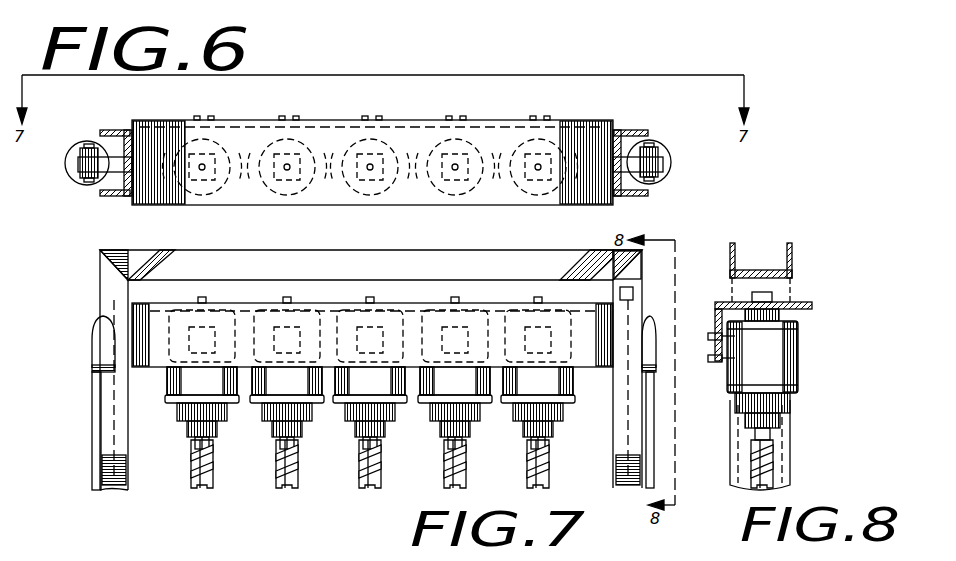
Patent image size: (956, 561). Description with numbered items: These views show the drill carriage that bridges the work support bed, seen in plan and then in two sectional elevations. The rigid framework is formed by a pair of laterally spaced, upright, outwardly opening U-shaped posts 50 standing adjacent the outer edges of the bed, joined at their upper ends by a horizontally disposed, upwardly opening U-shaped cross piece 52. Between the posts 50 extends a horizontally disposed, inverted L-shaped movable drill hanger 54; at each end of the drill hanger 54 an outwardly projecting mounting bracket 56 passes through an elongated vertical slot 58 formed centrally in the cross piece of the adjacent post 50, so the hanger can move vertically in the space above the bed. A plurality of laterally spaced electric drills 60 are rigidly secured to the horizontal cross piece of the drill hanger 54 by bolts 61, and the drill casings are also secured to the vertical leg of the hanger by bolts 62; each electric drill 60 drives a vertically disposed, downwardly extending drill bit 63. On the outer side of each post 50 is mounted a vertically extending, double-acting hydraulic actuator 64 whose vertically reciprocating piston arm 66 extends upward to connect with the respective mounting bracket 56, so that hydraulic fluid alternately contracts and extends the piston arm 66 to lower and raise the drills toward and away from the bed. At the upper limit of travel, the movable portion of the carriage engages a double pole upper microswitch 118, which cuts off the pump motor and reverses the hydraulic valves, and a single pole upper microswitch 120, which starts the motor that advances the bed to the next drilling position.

In FIG. 6, the post 50 is at (118, 134).
In FIG. 7, the post 50 is at (128, 478).
In FIG. 8, the cross piece 52 is at (758, 268).
In FIG. 6, the drill hanger 54 is at (240, 135).
In FIG. 7, the drill hanger 54 is at (410, 322).
In FIG. 8, the drill hanger 54 is at (812, 305).
In FIG. 6, the mounting bracket 56 is at (78, 150).
In FIG. 7, the mounting bracket 56 is at (93, 325).
In FIG. 6, the elongated vertical slot 58 is at (120, 150).
In FIG. 6, the electric drill 60 is at (385, 195).
In FIG. 7, the electric drill 60 is at (370, 408).
In FIG. 8, the electric drill 60 is at (762, 380).
In FIG. 6, the bolt 61 is at (290, 165).
In FIG. 7, the bolt 61 is at (208, 298).
In FIG. 8, the bolt 61 is at (768, 297).
In FIG. 6, the bolt 62 is at (365, 116).
In FIG. 8, the bolt 62 is at (712, 340).
In FIG. 7, the drill bit 63 is at (370, 488).
In FIG. 8, the drill bit 63 is at (774, 462).
In FIG. 6, the hydraulic actuator 64 is at (672, 160).
In FIG. 7, the piston arm 66 is at (92, 448).
In FIG. 7, the double pole upper microswitch 118 is at (633, 297).
In FIG. 7, the single pole upper microswitch 120 is at (640, 265).